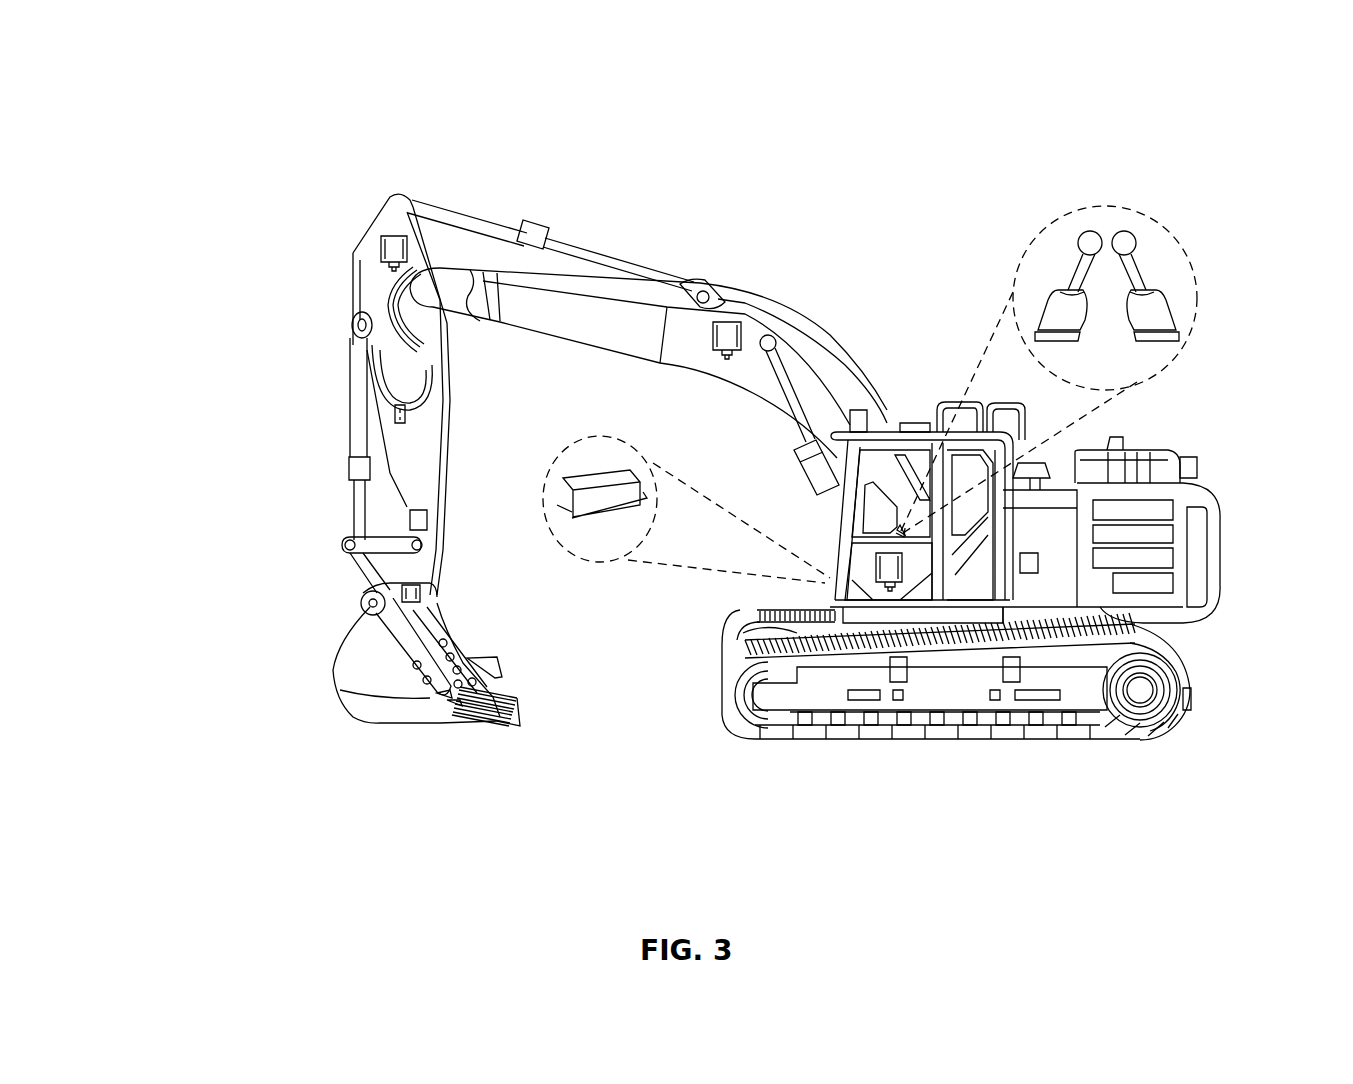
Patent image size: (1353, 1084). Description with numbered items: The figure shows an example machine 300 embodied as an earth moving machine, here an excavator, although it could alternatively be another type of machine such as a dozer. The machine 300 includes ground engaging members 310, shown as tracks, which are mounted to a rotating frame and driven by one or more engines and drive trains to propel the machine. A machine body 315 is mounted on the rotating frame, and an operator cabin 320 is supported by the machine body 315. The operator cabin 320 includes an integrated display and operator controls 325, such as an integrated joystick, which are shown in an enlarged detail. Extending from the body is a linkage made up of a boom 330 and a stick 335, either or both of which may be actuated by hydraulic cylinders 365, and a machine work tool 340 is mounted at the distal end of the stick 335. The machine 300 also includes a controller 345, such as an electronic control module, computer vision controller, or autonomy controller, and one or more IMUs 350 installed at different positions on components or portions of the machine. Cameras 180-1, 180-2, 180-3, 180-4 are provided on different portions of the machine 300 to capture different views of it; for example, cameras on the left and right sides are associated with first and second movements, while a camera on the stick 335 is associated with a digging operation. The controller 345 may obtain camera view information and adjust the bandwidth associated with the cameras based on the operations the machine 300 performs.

The machine 300 is at (195, 62).
The ground engaging members 310 is at (1193, 700).
The machine body 315 is at (1220, 543).
The operator cabin 320 is at (833, 523).
The operator controls 325 is at (1143, 214).
The boom 330 is at (723, 372).
The stick 335 is at (427, 438).
The machine work tool 340 is at (383, 693).
The controller 345 is at (587, 556).
The IMUs 350 is at (392, 236).
The hydraulic cylinders 365 is at (578, 257).
The camera 180-1 is at (930, 435).
The camera 180-2 is at (1197, 455).
The camera 180-3 is at (1038, 563).
The camera 180-4 is at (430, 517).